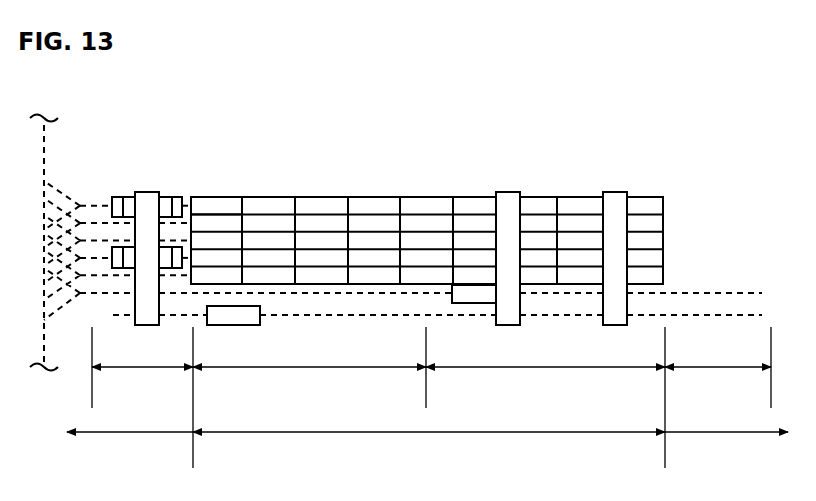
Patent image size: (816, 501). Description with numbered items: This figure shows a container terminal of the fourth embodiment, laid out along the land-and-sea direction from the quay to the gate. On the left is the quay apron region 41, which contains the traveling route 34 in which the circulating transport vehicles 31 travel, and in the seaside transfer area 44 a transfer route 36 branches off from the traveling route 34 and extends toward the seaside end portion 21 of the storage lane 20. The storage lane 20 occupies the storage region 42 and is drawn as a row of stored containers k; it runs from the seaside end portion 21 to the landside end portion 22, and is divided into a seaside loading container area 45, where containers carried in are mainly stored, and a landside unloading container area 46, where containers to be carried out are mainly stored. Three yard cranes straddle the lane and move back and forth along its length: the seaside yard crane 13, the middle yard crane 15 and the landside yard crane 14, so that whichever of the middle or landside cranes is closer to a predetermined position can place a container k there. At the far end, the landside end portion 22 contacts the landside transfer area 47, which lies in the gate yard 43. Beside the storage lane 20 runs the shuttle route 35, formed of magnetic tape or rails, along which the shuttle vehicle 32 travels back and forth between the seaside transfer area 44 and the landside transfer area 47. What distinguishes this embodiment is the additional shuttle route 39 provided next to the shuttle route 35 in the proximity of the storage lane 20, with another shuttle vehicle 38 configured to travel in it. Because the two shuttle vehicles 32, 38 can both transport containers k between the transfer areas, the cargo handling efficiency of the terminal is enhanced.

The seaside yard crane 13 is at (148, 203).
The landside yard crane 14 is at (612, 205).
The middle yard crane 15 is at (510, 207).
The storage lane 20 is at (417, 182).
The seaside end portion 21 is at (193, 212).
The landside end portion 22 is at (664, 240).
The circulating transport vehicle 31 is at (113, 258).
The shuttle vehicle 32 is at (478, 300).
The traveling route 34 is at (50, 130).
The shuttle route 35 is at (540, 294).
The transfer route 36 is at (108, 279).
The another shuttle vehicle 38 is at (243, 317).
The another shuttle route 39 is at (333, 317).
The quay apron region 41 is at (100, 433).
The storage region 42 is at (410, 433).
The gate yard 43 is at (712, 433).
The seaside transfer area 44 is at (130, 368).
The seaside loading container area 45 is at (315, 368).
The landside unloading container area 46 is at (525, 368).
The landside transfer area 47 is at (705, 368).
The container k is at (268, 210).